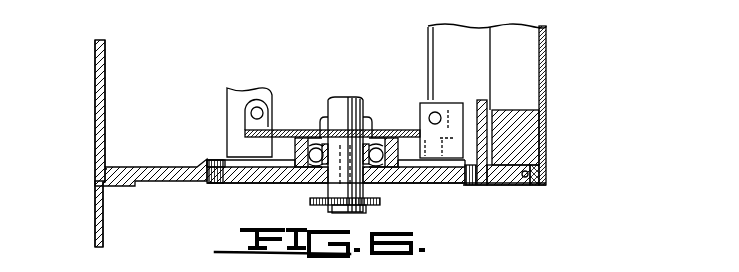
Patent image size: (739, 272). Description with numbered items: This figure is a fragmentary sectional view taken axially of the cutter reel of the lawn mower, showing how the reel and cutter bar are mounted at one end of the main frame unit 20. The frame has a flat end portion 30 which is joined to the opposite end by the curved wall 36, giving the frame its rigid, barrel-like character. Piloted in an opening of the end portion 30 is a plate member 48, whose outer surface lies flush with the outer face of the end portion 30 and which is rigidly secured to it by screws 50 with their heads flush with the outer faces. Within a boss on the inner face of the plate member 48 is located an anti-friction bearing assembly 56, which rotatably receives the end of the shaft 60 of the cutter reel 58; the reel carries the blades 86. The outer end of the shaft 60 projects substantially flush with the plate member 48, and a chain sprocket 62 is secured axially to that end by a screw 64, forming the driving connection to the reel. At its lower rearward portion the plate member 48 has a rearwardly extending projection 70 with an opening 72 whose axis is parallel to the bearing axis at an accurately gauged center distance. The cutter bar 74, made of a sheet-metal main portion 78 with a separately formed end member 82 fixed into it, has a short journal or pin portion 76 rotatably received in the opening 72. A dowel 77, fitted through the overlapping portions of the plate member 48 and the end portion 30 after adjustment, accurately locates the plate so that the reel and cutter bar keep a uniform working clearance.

The main frame unit 20 is at (94, 65).
The curved wall 36 is at (106, 109).
The end portion 30 is at (146, 167).
The plate member 48 is at (268, 184).
The screw 50 is at (212, 184).
The anti-friction bearing assembly 56 is at (388, 185).
The cutter reel 58 is at (282, 127).
The shaft 60 is at (344, 102).
The chain sprocket 62 is at (310, 201).
The screw 64 is at (334, 208).
The rearwardly extending projection 70 is at (540, 187).
The opening 72 is at (548, 174).
The cutter bar 74 is at (551, 62).
The journal or pin portion 76 is at (512, 180).
The dowel 77 is at (473, 186).
The main portion 78 is at (546, 33).
The end member 82 is at (523, 124).
The blade 86 is at (226, 110).